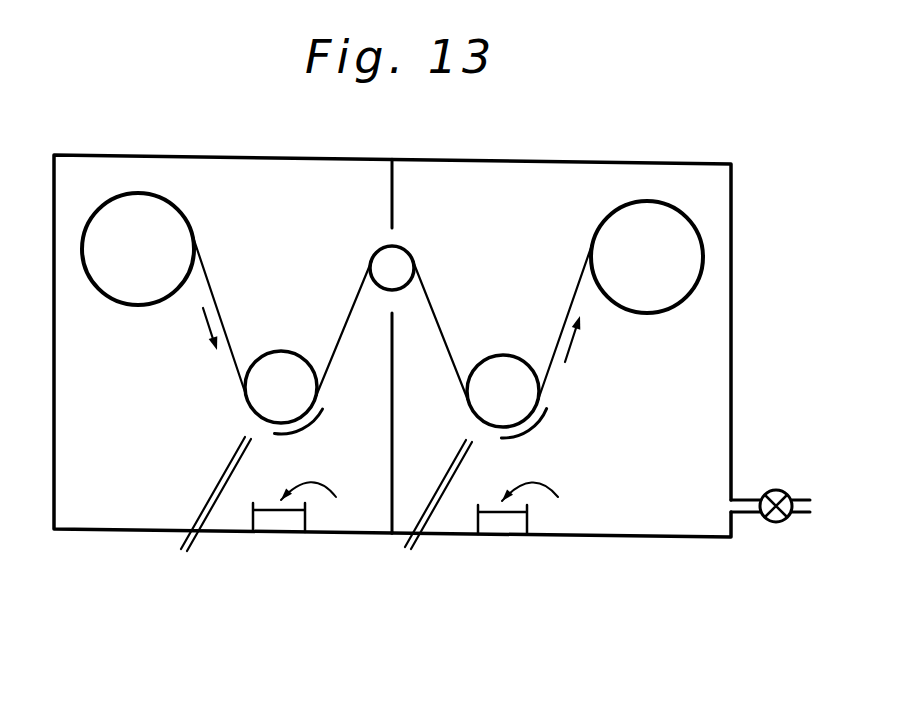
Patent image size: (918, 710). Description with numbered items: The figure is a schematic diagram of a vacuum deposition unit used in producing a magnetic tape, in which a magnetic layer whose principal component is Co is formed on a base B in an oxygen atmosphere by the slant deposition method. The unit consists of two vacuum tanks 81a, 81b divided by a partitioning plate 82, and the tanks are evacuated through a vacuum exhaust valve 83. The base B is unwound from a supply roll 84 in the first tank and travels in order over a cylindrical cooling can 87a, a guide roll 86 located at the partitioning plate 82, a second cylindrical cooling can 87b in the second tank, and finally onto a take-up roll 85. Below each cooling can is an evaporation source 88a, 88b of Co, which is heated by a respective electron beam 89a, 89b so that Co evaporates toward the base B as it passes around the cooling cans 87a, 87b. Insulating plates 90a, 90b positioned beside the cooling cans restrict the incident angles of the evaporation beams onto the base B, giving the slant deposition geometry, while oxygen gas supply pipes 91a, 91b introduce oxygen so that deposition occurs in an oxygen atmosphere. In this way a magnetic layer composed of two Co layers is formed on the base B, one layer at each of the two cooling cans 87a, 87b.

The vacuum tank 81a is at (280, 158).
The vacuum tank 81b is at (542, 163).
The partitioning plate 82 is at (394, 180).
The vacuum exhaust valve 83 is at (780, 490).
The supply roll 84 is at (130, 193).
The take-up roll 85 is at (657, 201).
The guide roll 86 is at (402, 246).
The cylindrical cooling can 87a is at (283, 352).
The cylindrical cooling can 87b is at (504, 355).
The evaporation source 88a is at (279, 533).
The evaporation source 88b is at (505, 535).
The electron beam 89a is at (336, 492).
The electron beam 89b is at (558, 496).
The insulating plate 90a is at (348, 417).
The insulating plate 90b is at (548, 411).
The oxygen gas supply pipe 91a is at (183, 549).
The oxygen gas supply pipe 91b is at (412, 549).
The base B is at (207, 273).